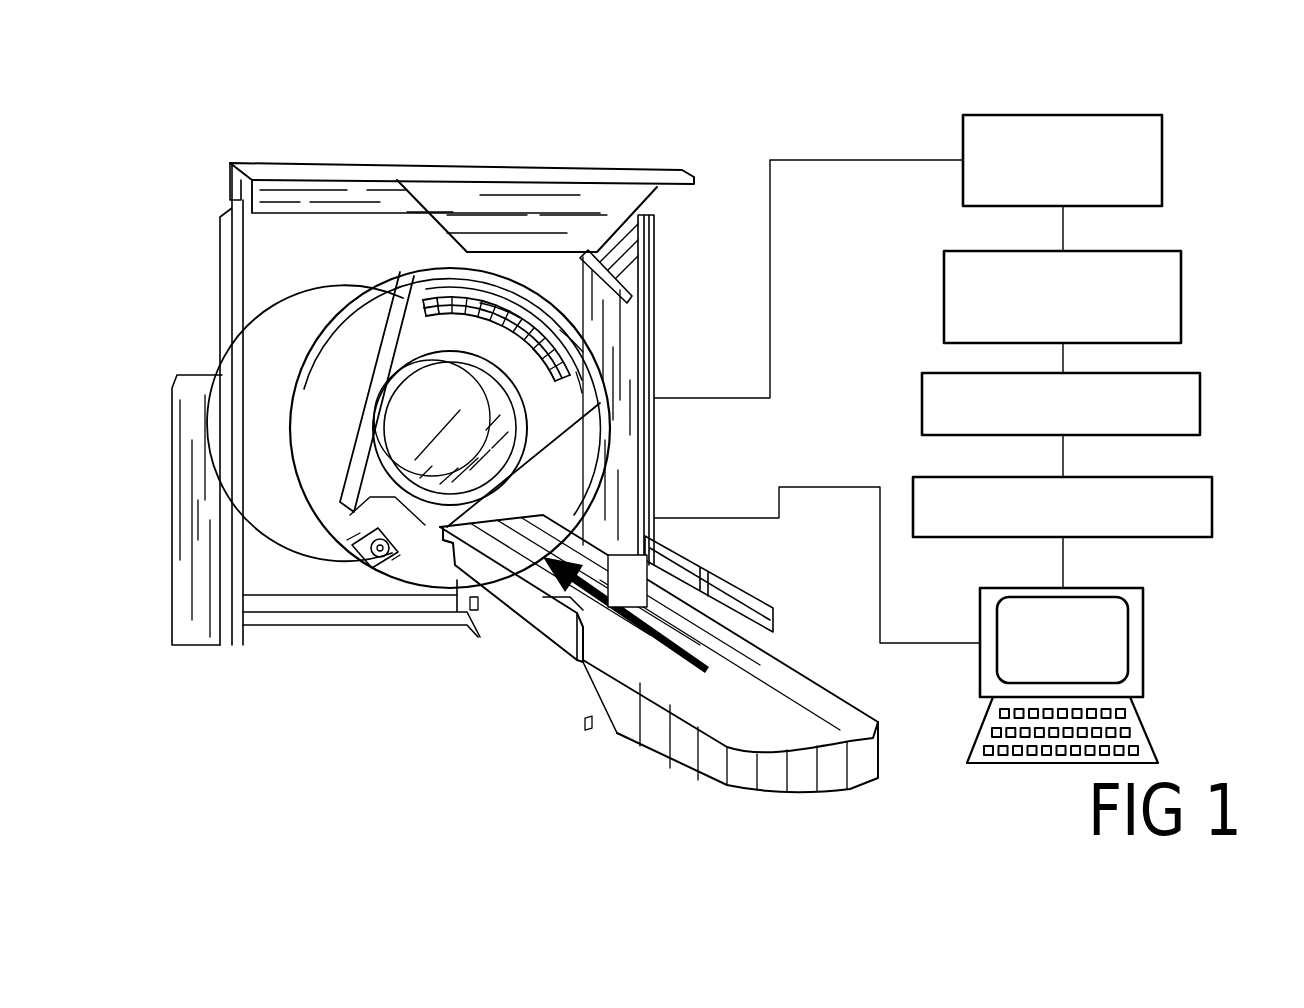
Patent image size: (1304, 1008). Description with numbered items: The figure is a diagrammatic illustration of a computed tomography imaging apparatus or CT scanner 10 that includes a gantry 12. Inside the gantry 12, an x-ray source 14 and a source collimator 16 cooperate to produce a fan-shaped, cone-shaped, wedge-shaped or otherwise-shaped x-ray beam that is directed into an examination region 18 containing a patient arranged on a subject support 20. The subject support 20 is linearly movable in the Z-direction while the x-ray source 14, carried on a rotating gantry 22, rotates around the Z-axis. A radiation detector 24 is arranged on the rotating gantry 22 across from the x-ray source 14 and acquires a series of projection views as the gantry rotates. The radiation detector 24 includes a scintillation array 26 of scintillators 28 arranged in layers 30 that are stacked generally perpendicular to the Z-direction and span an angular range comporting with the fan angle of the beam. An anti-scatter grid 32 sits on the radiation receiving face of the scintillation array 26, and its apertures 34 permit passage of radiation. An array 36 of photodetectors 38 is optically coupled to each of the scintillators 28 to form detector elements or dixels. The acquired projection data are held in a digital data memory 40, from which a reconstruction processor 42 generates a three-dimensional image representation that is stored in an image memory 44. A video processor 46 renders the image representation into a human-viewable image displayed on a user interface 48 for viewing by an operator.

The CT scanner 10 is at (692, 438).
The gantry 12 is at (445, 366).
The x-ray source 14 is at (362, 555).
The source collimator 16 is at (408, 417).
The examination region 18 is at (427, 415).
The subject support 20 is at (783, 712).
The rotating gantry 22 is at (372, 403).
The radiation detector 24 is at (540, 318).
The scintillation array 26 is at (583, 352).
The scintillators 28 is at (470, 298).
The layers 30 is at (413, 292).
The anti-scatter grid 32 is at (432, 313).
The apertures 34 is at (548, 370).
The array of photodetectors 36 is at (582, 393).
The photodetectors 38 is at (497, 306).
The digital data memory 40 is at (1148, 197).
The reconstruction processor 42 is at (1155, 335).
The image memory 44 is at (1192, 421).
The video processor 46 is at (1202, 524).
The user interface 48 is at (1143, 662).